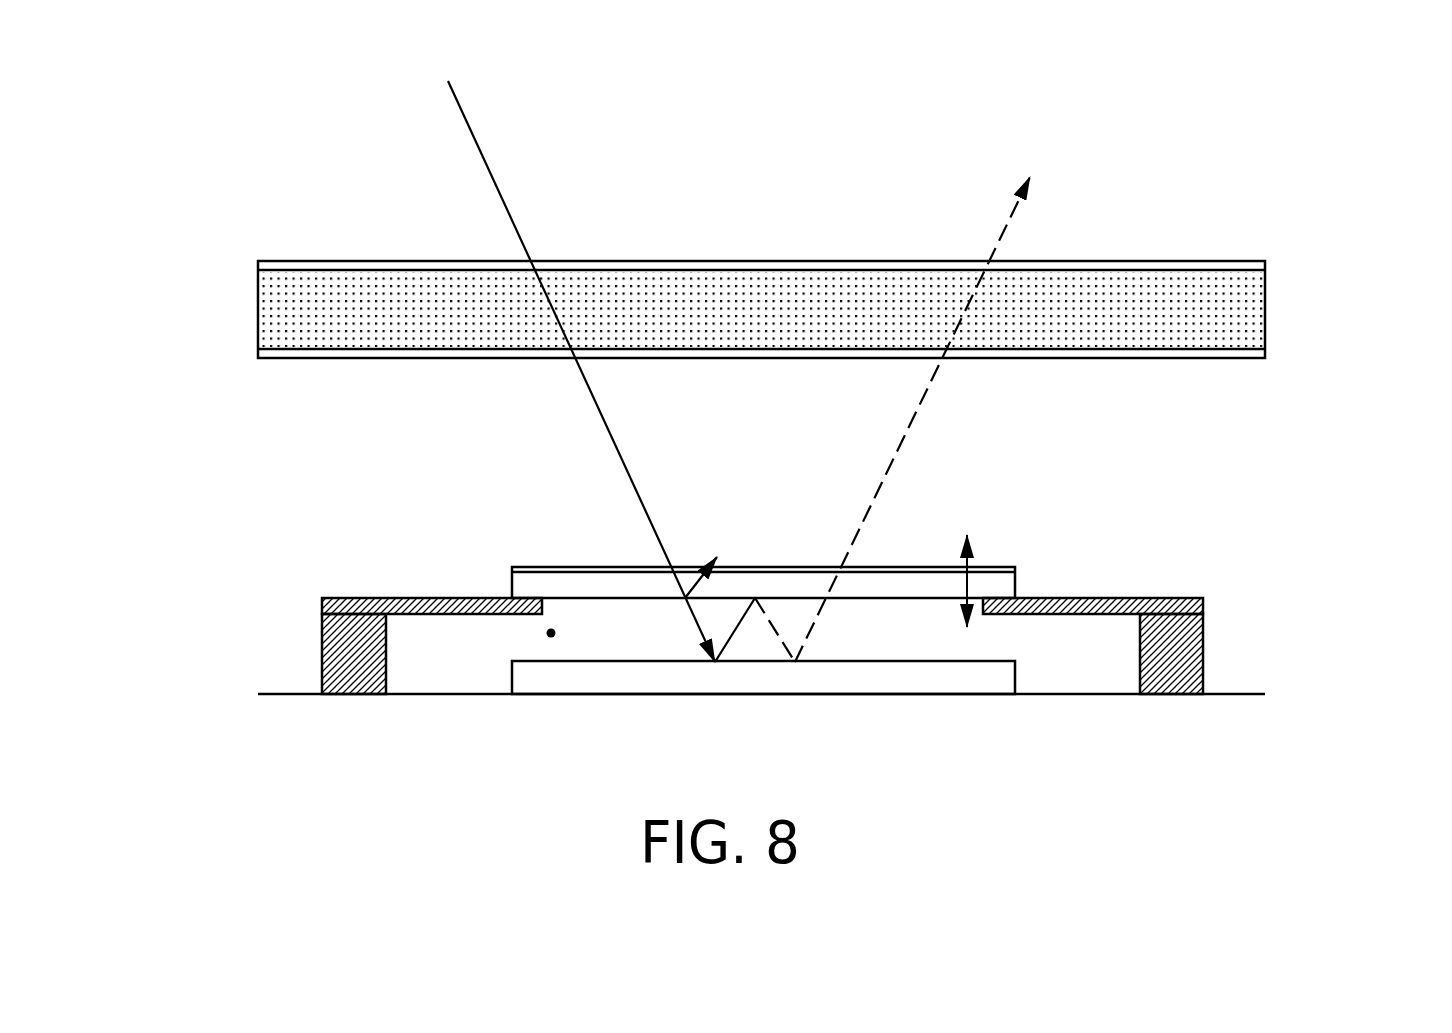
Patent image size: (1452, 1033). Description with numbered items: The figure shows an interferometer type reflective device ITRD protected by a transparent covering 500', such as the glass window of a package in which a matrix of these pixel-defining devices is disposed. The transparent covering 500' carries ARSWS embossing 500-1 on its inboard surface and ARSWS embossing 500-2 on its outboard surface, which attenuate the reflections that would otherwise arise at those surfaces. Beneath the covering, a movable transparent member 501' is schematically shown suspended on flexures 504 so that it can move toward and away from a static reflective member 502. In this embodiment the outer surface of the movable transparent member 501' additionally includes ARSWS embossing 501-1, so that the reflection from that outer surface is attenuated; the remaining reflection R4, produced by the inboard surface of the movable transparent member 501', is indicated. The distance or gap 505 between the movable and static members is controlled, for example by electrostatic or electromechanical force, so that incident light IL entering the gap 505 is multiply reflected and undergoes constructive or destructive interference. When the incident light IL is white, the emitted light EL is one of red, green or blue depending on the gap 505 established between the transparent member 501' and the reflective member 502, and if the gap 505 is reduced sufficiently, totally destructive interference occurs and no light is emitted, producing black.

The transparent covering 500' is at (732, 269).
The ARSWS embossing (outboard surface) 500-2 is at (1167, 261).
The ARSWS embossing (inboard surface) 500-1 is at (1145, 358).
The interferometer type reflective device ITRD is at (247, 490).
The movable transparent member 501' is at (772, 539).
The ARSWS embossing on movable transparent member 501-1 is at (520, 565).
The static reflective member 502 is at (583, 683).
The flexures 504 is at (407, 598).
The gap 505 is at (551, 633).
The incident light IL is at (581, 371).
The emitted light EL is at (888, 395).
The reflection off inboard surface of movable transparent member R4 is at (722, 558).